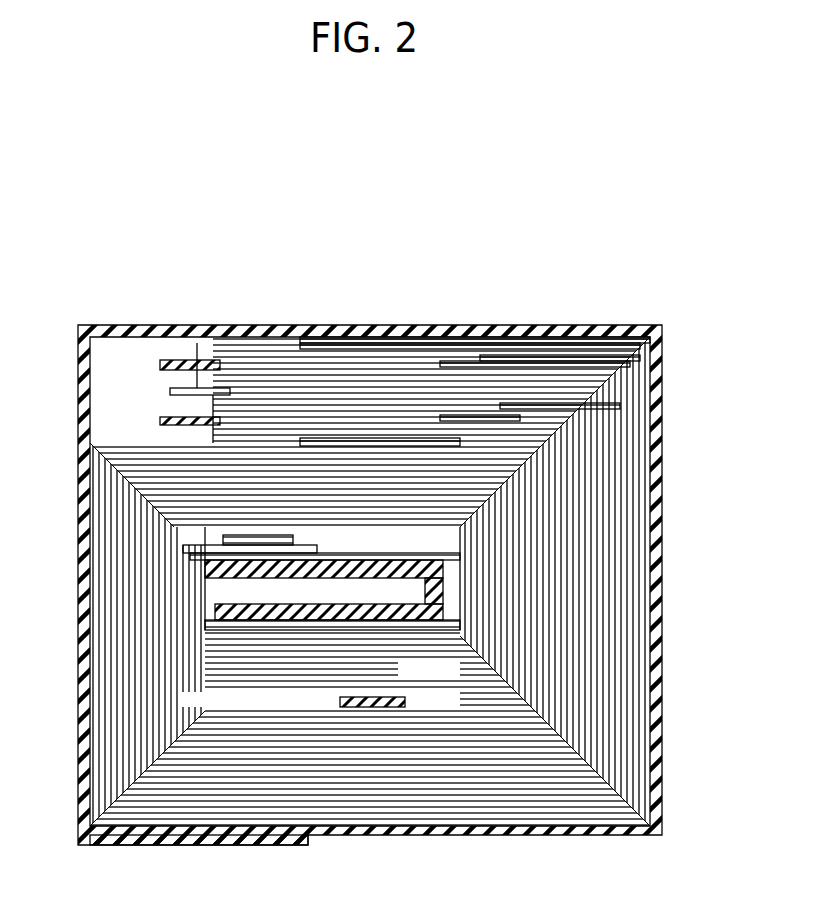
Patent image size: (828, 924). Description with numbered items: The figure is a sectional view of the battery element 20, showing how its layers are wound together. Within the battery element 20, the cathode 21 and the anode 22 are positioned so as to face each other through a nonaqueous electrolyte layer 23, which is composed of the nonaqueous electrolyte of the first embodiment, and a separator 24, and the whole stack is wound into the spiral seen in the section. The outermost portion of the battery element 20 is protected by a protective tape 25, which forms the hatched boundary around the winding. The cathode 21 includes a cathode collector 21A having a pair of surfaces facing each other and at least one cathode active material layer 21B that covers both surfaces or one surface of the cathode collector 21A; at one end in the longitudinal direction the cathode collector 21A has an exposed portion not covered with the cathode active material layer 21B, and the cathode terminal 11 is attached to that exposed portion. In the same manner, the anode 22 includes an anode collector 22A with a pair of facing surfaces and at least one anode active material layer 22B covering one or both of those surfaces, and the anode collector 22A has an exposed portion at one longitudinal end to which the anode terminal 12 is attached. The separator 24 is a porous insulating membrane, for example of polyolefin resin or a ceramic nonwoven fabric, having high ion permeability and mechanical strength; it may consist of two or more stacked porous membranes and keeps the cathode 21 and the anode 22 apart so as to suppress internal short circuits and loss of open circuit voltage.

The battery element 20 is at (477, 150).
The protective tape 25 is at (622, 332).
The cathode 21 is at (113, 229).
The cathode collector 21A is at (178, 392).
The cathode active material layer 21B is at (245, 403).
The anode 22 is at (448, 229).
The anode collector 22A is at (326, 337).
The anode active material layer 22B is at (428, 445).
The nonaqueous electrolyte layer 23 is at (535, 428).
The separator 24 is at (447, 420).
The cathode terminal 11 is at (262, 545).
The anode terminal 12 is at (375, 707).